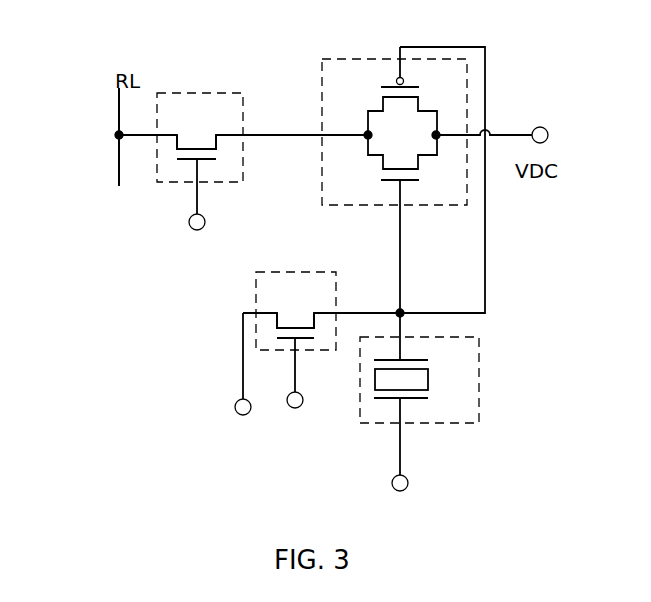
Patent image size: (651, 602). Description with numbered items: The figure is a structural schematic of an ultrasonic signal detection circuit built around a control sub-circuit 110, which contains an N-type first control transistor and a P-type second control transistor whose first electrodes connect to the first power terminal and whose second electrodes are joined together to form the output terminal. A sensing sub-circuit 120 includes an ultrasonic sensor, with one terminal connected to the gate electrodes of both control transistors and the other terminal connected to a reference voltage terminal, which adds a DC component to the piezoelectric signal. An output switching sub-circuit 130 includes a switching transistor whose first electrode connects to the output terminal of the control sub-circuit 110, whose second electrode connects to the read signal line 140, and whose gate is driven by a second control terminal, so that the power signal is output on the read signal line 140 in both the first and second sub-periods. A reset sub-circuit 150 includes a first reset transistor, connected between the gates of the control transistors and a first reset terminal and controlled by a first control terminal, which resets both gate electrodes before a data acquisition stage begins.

The control sub-circuit 110 is at (353, 59).
The sensing sub-circuit 120 is at (438, 423).
The output switching sub-circuit 130 is at (200, 93).
The read signal line 140 is at (118, 165).
The reset sub-circuit 150 is at (255, 292).